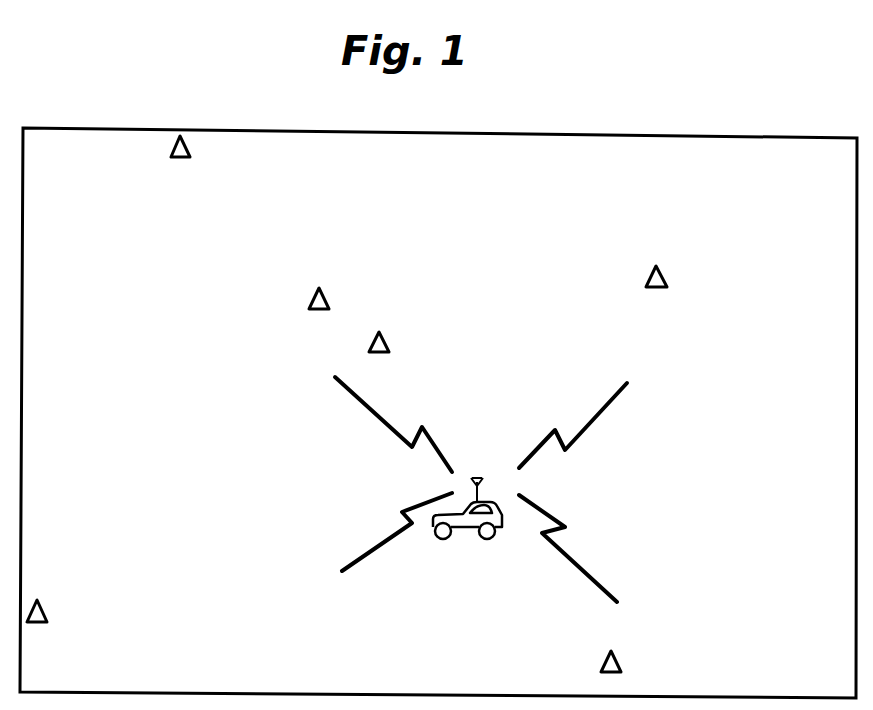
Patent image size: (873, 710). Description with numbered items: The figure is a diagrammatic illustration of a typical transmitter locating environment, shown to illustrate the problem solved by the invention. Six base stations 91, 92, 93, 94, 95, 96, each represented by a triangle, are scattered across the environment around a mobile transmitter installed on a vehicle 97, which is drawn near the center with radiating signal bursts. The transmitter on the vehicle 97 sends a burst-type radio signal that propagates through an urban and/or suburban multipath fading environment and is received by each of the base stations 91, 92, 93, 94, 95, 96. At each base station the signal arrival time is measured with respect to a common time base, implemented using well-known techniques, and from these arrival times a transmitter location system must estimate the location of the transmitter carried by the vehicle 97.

The base station 91 is at (186, 142).
The base station 92 is at (654, 268).
The base station 93 is at (325, 290).
The base station 94 is at (390, 343).
The base station 95 is at (40, 601).
The base station 96 is at (612, 652).
The vehicle 97 is at (457, 542).